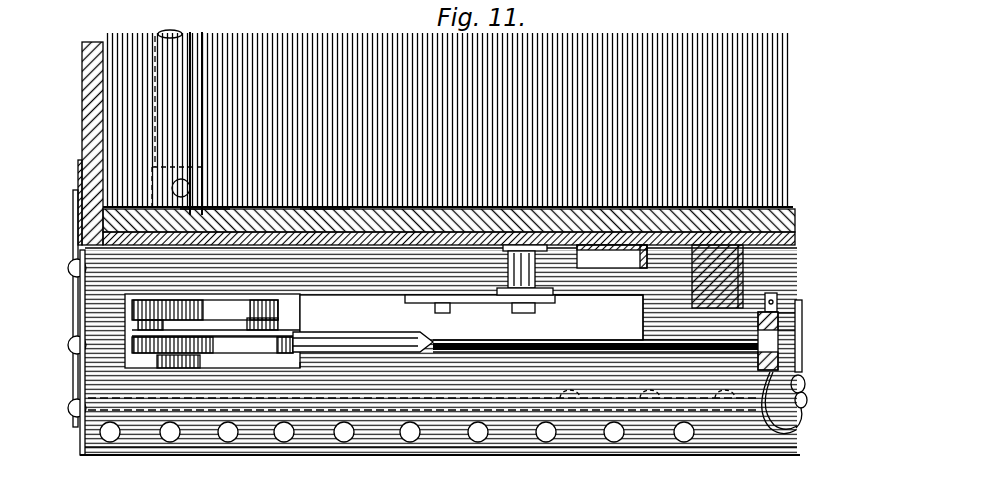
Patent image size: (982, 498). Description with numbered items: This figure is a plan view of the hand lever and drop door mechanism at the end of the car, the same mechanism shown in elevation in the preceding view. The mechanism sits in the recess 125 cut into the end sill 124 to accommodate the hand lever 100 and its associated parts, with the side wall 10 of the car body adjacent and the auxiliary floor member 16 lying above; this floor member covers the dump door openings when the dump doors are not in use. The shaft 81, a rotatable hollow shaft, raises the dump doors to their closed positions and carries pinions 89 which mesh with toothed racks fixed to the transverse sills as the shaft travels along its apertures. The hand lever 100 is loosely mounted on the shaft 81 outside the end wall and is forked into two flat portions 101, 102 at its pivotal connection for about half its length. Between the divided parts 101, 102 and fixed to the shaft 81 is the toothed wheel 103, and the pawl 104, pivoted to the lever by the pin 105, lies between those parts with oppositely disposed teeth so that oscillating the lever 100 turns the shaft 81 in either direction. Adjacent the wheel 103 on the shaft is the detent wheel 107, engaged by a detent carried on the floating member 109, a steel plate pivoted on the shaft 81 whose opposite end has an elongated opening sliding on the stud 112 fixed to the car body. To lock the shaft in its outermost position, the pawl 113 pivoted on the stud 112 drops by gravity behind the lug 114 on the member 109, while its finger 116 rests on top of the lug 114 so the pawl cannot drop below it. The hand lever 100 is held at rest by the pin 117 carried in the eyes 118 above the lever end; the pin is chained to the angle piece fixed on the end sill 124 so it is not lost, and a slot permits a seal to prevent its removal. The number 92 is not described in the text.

The auxiliary floor member 16 is at (552, 106).
The shaft 81 is at (190, 135).
The pinion 89 is at (223, 208).
The sill plate 92 is at (327, 213).
The hand lever 100 is at (458, 344).
The divided part of hand lever 101 is at (337, 352).
The divided part of hand lever 102 is at (383, 337).
The toothed wheel 103 is at (177, 368).
The pawl 104 is at (247, 343).
The pin 105 is at (283, 330).
The detent wheel 107 is at (137, 307).
The floating member 109 is at (330, 298).
The stud 112 is at (507, 280).
The pawl 113 is at (483, 303).
The lug 114 is at (435, 311).
The finger 116 is at (407, 296).
The pin 117 is at (796, 300).
The eye 118 is at (757, 318).
The end sill 124 is at (568, 397).
The recess 125 is at (300, 360).
The side wall 10 is at (80, 360).